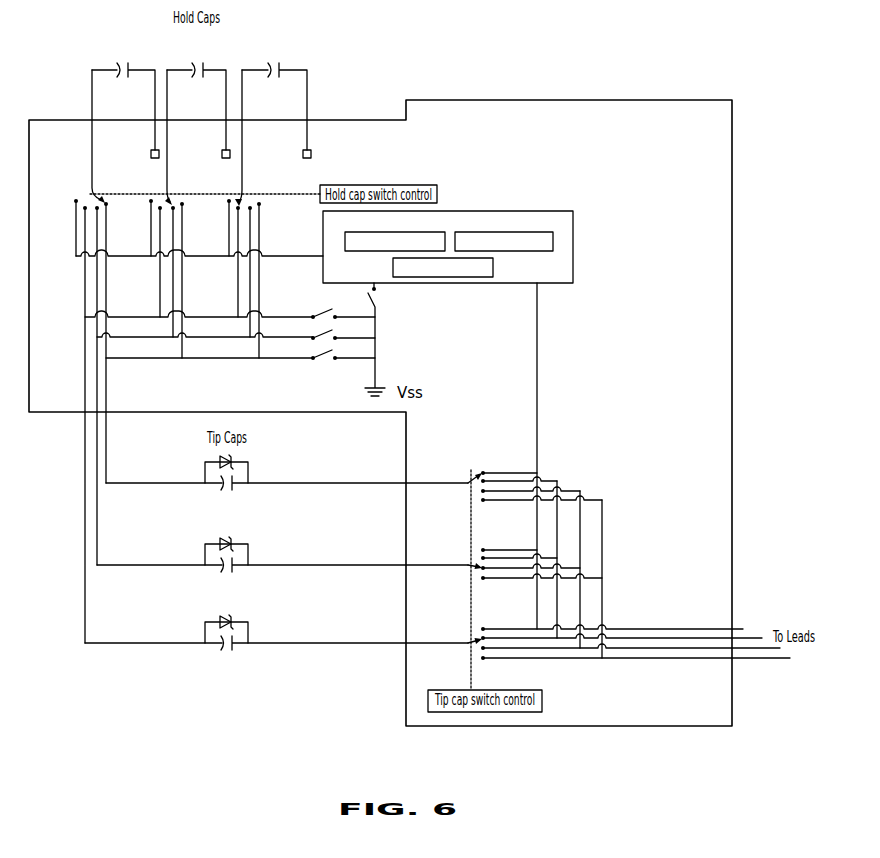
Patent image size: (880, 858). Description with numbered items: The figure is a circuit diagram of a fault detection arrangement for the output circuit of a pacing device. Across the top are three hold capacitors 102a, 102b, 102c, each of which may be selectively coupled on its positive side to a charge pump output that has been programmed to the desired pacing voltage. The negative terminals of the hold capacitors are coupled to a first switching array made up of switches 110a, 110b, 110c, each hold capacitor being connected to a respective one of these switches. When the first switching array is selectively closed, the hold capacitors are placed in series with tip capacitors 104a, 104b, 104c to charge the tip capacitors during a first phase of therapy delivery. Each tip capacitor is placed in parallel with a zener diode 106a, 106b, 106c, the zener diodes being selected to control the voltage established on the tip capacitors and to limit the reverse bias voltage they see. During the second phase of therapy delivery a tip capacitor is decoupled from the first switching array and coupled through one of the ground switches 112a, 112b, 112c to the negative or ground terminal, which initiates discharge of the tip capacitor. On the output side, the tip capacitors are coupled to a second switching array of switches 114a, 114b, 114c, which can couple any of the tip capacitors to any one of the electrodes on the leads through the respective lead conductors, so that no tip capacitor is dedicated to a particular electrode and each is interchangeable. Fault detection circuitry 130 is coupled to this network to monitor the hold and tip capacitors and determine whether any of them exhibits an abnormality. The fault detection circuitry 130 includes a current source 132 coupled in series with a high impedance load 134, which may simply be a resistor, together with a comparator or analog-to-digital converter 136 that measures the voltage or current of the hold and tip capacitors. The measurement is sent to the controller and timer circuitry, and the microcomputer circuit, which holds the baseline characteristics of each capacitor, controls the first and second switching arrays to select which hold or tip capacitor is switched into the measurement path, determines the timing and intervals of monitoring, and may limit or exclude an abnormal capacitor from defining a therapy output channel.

The hold capacitor 102a is at (125, 122).
The hold capacitor 102b is at (197, 123).
The hold capacitor 102c is at (273, 123).
The tip capacitor 104a is at (287, 493).
The tip capacitor 104b is at (282, 575).
The tip capacitor 104c is at (276, 656).
The zener diode 106a is at (244, 467).
The zener diode 106b is at (226, 539).
The zener diode 106c is at (226, 619).
The switch of first switching array 110a is at (107, 421).
The switch of first switching array 110b is at (181, 278).
The switch of first switching array 110c is at (258, 278).
The ground switch 112a is at (328, 308).
The ground switch 112b is at (328, 329).
The ground switch 112c is at (328, 350).
The switch of second switching array 114a is at (535, 475).
The switch of second switching array 114b is at (535, 554).
The switch of second switching array 114c is at (629, 633).
The fault detection circuitry 130 is at (448, 248).
The current source 132 is at (372, 251).
The high impedance load 134 is at (467, 277).
The analog-to-digital converter 136 is at (518, 251).